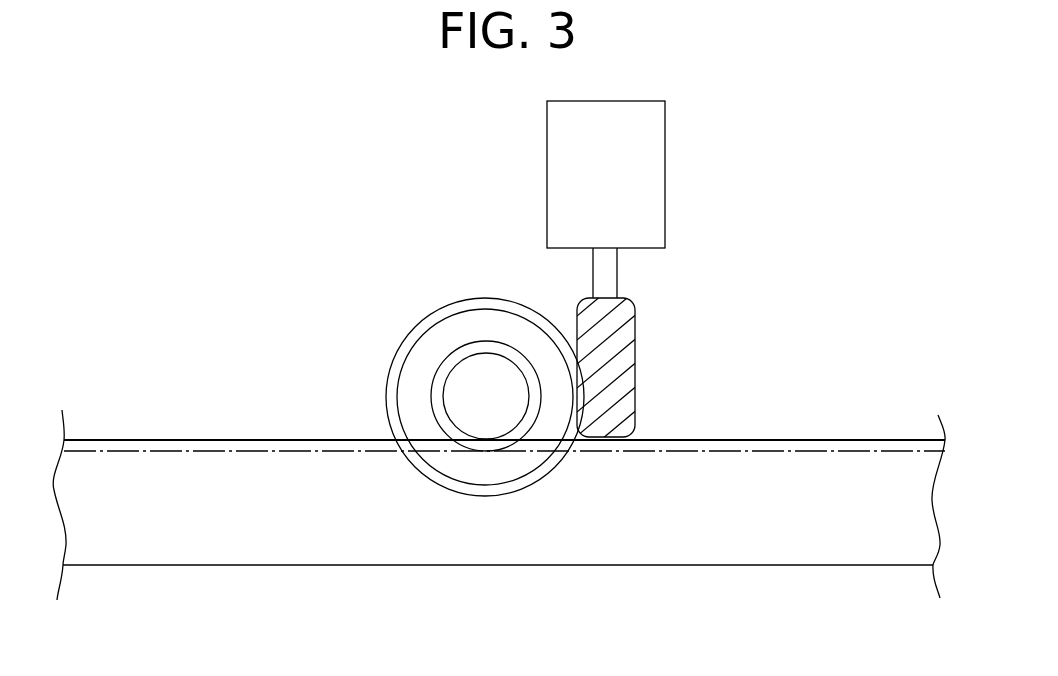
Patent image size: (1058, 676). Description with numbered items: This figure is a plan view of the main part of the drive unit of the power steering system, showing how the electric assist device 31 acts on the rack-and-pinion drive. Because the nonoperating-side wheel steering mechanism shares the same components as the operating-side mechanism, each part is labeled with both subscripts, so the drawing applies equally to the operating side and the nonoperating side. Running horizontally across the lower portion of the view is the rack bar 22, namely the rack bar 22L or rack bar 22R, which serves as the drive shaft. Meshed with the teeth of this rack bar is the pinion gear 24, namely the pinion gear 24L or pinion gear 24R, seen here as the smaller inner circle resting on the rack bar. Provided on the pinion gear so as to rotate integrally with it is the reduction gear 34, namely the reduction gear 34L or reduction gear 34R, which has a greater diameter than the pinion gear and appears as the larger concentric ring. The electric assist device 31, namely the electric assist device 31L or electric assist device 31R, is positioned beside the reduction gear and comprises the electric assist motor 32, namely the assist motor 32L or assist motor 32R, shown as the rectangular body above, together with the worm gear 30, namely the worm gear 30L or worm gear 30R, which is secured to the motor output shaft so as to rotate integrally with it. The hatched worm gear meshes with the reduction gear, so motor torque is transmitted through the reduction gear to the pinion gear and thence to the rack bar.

The rack bar 22 is at (499, 523).
The rack bar 22L is at (499, 523).
The rack bar 22R is at (838, 550).
The pinion gear 24 is at (407, 382).
The pinion gear 24L is at (407, 382).
The pinion gear 24R is at (443, 373).
The worm gear 30 is at (664, 376).
The worm gear 30L is at (664, 376).
The worm gear 30R is at (625, 383).
The electric assist device 31 is at (732, 313).
The electric assist device 31L is at (732, 313).
The electric assist device 31R is at (732, 313).
The electric assist motor 32 is at (675, 199).
The electric assist motor 32L is at (675, 199).
The electric assist motor 32R is at (653, 187).
The reduction gear 34 is at (485, 354).
The reduction gear 34L is at (485, 354).
The reduction gear 34R is at (473, 298).